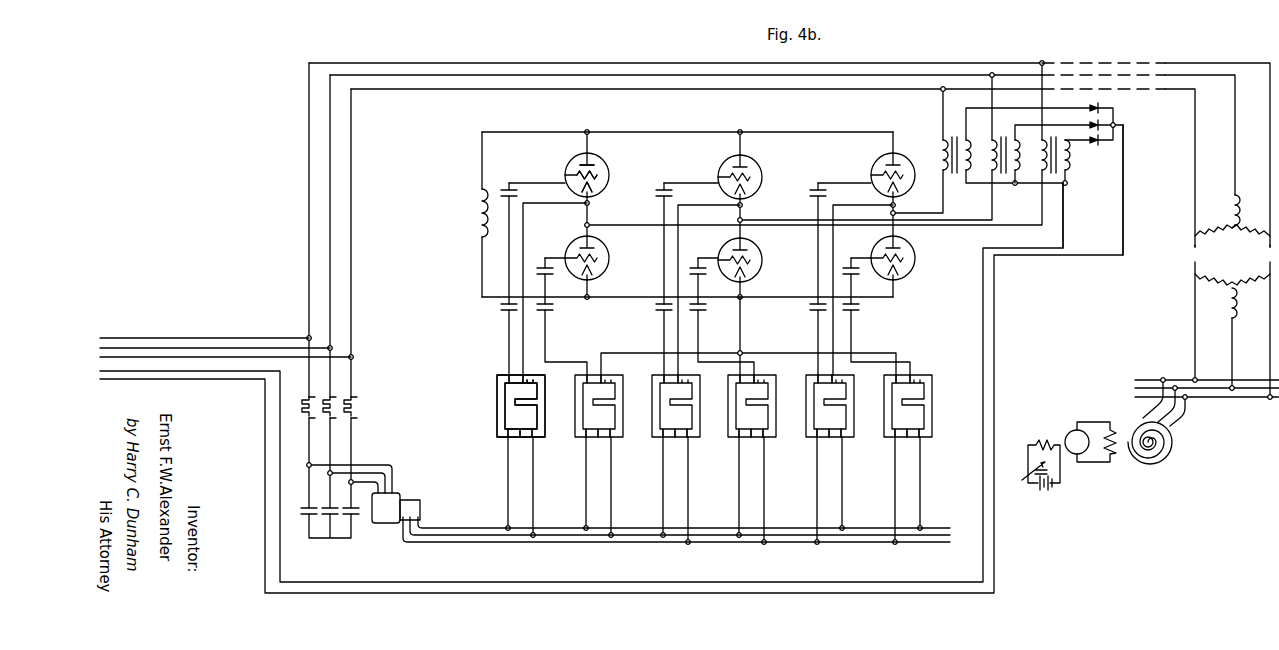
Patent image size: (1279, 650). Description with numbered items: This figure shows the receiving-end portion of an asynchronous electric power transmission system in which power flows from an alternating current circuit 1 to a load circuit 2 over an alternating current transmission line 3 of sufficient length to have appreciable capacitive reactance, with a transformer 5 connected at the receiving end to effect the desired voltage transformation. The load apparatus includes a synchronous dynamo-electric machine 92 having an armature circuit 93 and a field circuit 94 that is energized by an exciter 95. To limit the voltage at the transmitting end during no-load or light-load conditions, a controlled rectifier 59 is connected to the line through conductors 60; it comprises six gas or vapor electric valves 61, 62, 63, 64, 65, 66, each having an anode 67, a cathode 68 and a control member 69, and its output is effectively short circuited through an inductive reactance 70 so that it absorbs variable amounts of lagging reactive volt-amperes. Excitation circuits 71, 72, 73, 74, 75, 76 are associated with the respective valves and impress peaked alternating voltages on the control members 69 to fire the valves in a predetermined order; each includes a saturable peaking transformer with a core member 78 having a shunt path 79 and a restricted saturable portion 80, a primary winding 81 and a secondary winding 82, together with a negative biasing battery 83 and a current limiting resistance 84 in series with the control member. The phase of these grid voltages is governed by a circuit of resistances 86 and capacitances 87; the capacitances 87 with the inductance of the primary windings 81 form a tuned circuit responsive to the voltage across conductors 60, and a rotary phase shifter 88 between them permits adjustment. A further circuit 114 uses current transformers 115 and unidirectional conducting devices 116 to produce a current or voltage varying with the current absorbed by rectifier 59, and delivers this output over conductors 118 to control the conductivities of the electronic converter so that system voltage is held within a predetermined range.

The alternating current circuit 1 is at (1108, 92).
The alternating current circuit 2 is at (1257, 388).
The alternating current transmission line 3 is at (1112, 78).
The transformer 5 is at (1238, 263).
The controlled rectifier 59 is at (748, 122).
The conductors 60 is at (152, 346).
The electric valve 61 is at (602, 162).
The electric valve 62 is at (604, 252).
The electric valve 63 is at (757, 166).
The electric valve 64 is at (759, 253).
The electric valve 65 is at (908, 160).
The electric valve 66 is at (907, 251).
The anode 67 is at (580, 163).
The cathode 68 is at (578, 188).
The control member 69 is at (600, 174).
The inductive reactance 70 is at (476, 213).
The excitation circuit 71 is at (500, 471).
The excitation circuit 72 is at (575, 471).
The excitation circuit 73 is at (654, 471).
The excitation circuit 74 is at (729, 471).
The excitation circuit 75 is at (805, 471).
The excitation circuit 76 is at (882, 471).
The core member 78 is at (497, 378).
The shunt path 79 is at (518, 408).
The restricted saturable portion 80 is at (529, 378).
The primary winding 81 is at (518, 438).
The secondary winding 82 is at (510, 377).
The battery 83 is at (500, 308).
The current limiting resistance 84 is at (507, 192).
The resistances 86 is at (353, 395).
The capacitances 87 is at (336, 511).
The rotary phase shifter 88 is at (396, 494).
The dynamo-electric machine 92 is at (1133, 481).
The armature circuit 93 is at (1155, 443).
The field circuit 94 is at (1108, 432).
The exciter 95 is at (1061, 425).
The circuit 114 is at (1100, 200).
The current transformers 115 is at (953, 137).
The unidirectional conducting devices 116 is at (1104, 141).
The conductors 118 is at (148, 372).